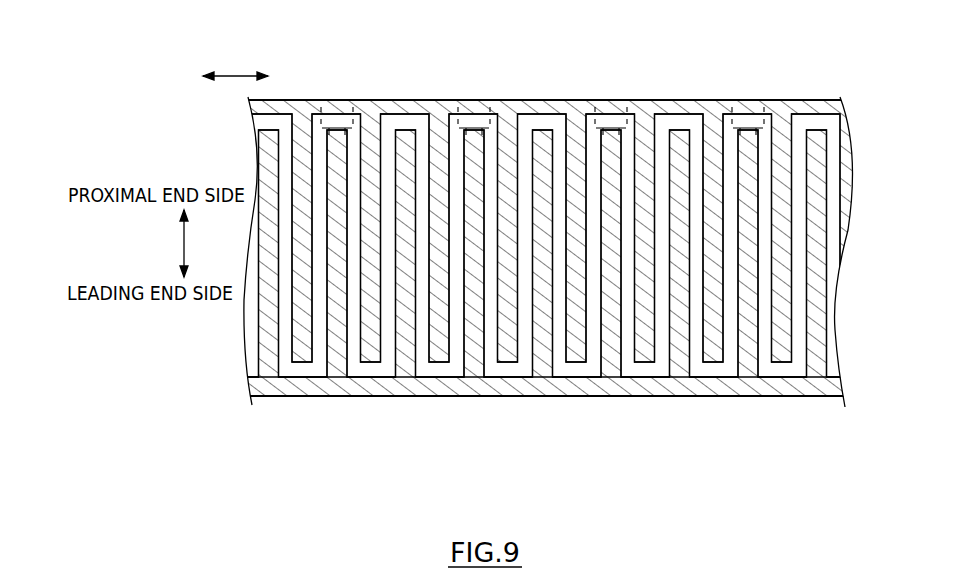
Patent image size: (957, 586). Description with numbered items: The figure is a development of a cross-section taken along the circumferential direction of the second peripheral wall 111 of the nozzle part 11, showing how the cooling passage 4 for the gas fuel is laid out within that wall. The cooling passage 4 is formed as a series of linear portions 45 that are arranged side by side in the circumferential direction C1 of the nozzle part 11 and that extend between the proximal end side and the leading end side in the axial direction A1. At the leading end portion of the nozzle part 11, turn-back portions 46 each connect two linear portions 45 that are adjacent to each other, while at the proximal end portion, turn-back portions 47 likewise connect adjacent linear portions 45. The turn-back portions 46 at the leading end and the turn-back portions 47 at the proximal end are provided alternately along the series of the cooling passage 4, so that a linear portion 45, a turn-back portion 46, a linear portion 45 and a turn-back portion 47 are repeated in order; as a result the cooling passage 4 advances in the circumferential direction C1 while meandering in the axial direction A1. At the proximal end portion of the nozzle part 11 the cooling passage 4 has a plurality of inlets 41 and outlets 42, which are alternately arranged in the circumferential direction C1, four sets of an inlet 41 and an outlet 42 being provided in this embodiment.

The cooling passage 4 is at (710, 370).
The nozzle part 11 is at (382, 406).
The second peripheral wall 111 is at (323, 398).
The inlet 41 is at (373, 98).
The outlet 42 is at (442, 100).
The linear portion 45 is at (630, 333).
The turn-back portion 46 is at (527, 450).
The turn-back portion 47 is at (545, 123).
The circumferential direction C1 is at (242, 75).
The axial direction A1 is at (178, 248).